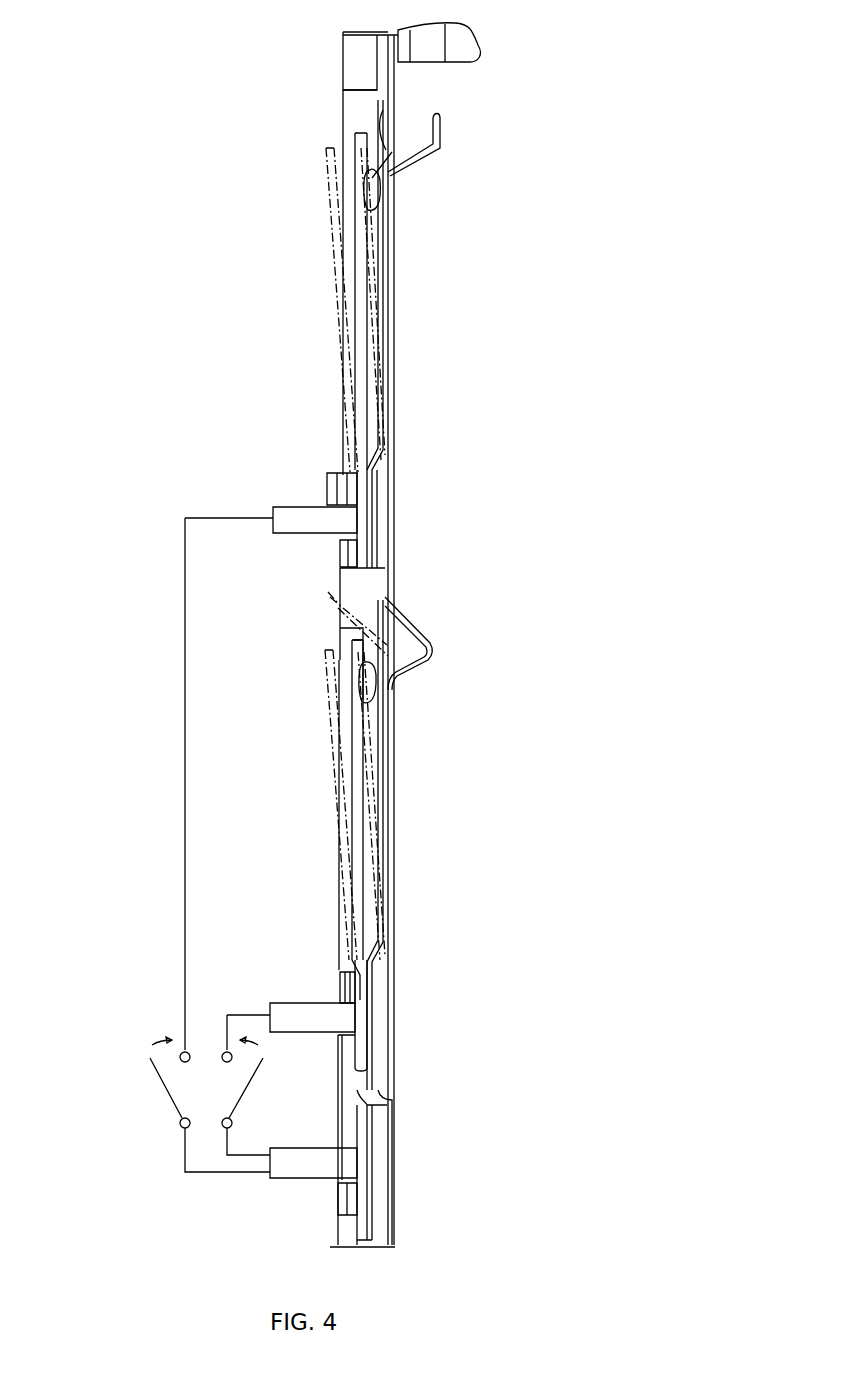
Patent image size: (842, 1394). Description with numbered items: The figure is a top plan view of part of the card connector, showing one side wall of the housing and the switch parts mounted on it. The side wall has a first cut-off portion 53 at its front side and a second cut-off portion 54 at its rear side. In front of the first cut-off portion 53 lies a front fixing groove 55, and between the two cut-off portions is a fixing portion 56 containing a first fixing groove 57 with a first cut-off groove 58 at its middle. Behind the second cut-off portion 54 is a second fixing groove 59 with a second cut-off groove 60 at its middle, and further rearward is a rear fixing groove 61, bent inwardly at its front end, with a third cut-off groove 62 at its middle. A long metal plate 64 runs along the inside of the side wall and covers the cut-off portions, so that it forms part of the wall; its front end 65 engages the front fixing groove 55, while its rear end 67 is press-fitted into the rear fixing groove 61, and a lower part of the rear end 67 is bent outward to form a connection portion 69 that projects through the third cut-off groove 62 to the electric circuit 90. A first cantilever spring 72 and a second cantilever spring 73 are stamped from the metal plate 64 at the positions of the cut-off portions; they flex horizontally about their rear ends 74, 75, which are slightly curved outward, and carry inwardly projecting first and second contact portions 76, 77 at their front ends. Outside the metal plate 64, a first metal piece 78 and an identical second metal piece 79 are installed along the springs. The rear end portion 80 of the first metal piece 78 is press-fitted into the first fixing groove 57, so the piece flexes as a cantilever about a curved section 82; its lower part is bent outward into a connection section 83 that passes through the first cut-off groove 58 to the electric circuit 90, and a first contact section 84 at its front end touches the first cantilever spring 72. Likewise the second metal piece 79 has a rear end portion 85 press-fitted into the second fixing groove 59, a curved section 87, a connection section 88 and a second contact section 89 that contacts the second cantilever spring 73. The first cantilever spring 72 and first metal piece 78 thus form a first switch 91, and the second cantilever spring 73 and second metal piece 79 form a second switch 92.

The first cut-off portion 53 is at (348, 310).
The second cut-off portion 54 is at (340, 785).
The front fixing groove 55 is at (388, 43).
The fixing portion 56 is at (340, 553).
The first fixing groove 57 is at (340, 578).
The first cut-off groove 58 is at (330, 505).
The second fixing groove 59 is at (357, 1018).
The second cut-off groove 60 is at (340, 985).
The rear fixing groove 61 is at (367, 1158).
The third cut-off groove 62 is at (338, 1182).
The metal plate 64 is at (383, 102).
The front end 65 is at (390, 63).
The rear end 67 is at (365, 1197).
The connection portion 69 is at (283, 1158).
The first cantilever spring 72 is at (402, 312).
The second cantilever spring 73 is at (397, 845).
The rear end 74 is at (395, 460).
The rear end 75 is at (393, 948).
The first contact portion 76 is at (441, 150).
The second contact portion 77 is at (433, 652).
The first metal piece 78 is at (347, 275).
The second metal piece 79 is at (363, 757).
The rear end portion 80 is at (367, 525).
The curved section 82 is at (358, 455).
The connection section 83 is at (285, 508).
The first contact section 84 is at (372, 185).
The rear end portion 85 is at (362, 1045).
The curved section 87 is at (350, 965).
The connection section 88 is at (285, 1008).
The second contact section 89 is at (372, 690).
The electric circuit 90 is at (185, 880).
The first switch 91 is at (343, 349).
The second switch 92 is at (343, 830).